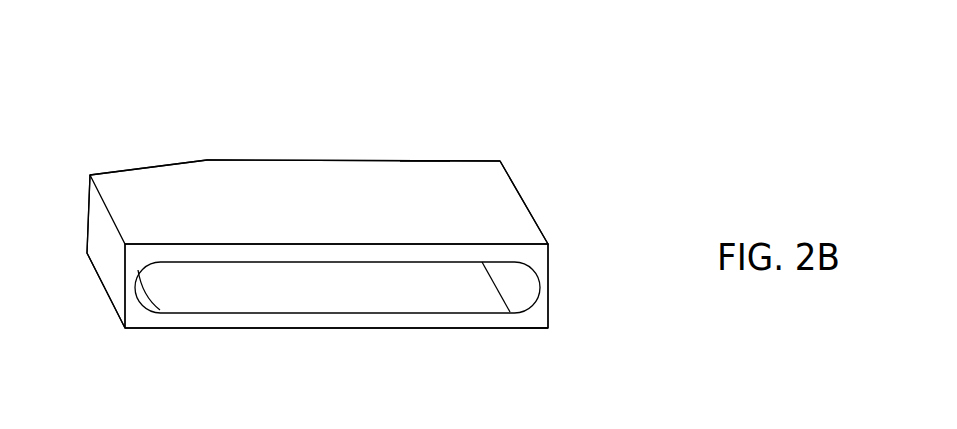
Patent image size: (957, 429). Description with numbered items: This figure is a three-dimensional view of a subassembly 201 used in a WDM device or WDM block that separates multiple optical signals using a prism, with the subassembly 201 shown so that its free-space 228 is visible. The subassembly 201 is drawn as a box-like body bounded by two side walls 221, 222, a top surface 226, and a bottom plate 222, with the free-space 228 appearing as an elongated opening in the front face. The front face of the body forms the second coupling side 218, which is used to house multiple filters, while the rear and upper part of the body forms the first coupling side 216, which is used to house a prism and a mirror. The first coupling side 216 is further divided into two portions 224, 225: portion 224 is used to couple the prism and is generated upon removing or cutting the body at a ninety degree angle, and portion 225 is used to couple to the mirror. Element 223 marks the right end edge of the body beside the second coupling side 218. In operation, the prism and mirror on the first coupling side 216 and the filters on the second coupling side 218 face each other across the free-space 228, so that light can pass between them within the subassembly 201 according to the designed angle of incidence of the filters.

The subassembly 201 is at (299, 221).
The first coupling side 216 is at (423, 130).
The second coupling side 218 is at (528, 342).
The side wall 221 is at (108, 257).
The bottom plate 222 is at (232, 328).
The side edge 223 is at (551, 286).
The portion 224 is at (168, 165).
The portion 225 is at (405, 158).
The top surface 226 is at (500, 205).
The free-space 228 is at (358, 284).